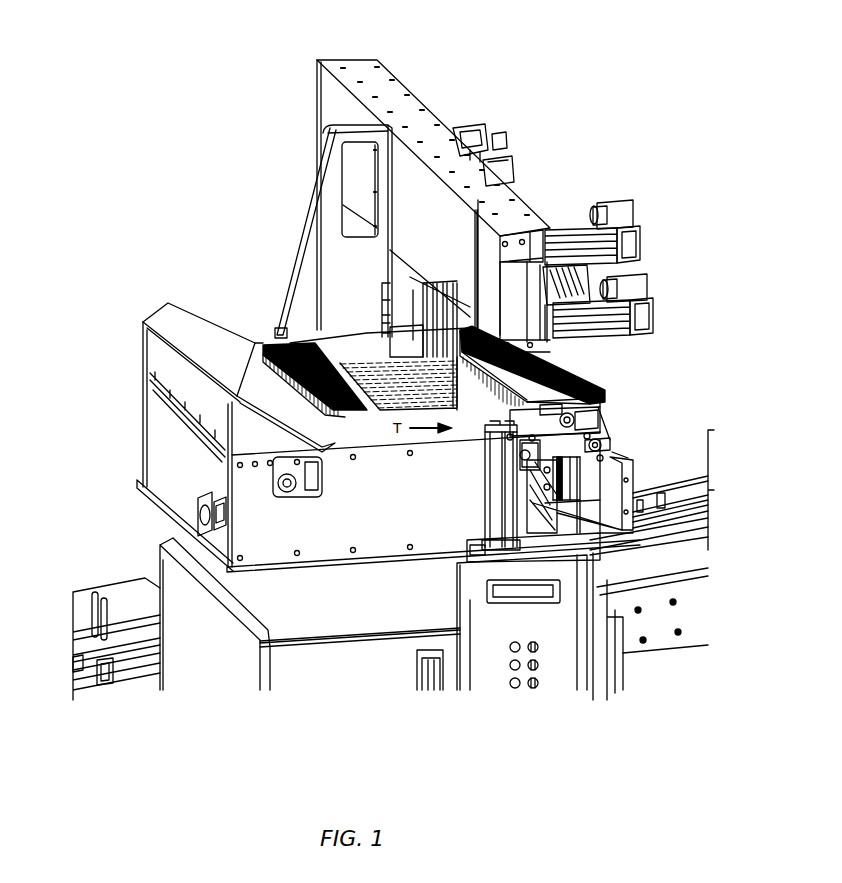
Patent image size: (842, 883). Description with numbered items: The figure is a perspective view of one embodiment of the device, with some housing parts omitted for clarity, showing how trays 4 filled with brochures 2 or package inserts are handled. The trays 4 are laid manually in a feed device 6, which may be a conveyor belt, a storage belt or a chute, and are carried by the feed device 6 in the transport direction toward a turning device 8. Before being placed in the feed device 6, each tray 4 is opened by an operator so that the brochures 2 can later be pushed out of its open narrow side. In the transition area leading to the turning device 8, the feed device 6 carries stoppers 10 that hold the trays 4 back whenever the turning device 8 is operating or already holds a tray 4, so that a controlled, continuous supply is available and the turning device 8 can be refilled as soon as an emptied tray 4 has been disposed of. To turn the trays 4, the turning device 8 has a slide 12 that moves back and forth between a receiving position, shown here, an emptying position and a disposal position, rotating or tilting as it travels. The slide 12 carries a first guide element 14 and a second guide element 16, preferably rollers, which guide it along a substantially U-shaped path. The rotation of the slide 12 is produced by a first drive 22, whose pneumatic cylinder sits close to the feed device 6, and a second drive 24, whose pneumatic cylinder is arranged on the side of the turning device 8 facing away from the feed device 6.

The brochures 2 is at (273, 335).
The trays 4 is at (257, 374).
The feed device 6 is at (370, 337).
The turning device 8 is at (555, 438).
The stoppers 10 is at (457, 337).
The slide 12 is at (538, 447).
The first guide element 14 is at (525, 458).
The second guide element 16 is at (597, 447).
The first drive 22 is at (490, 482).
The second drive 24 is at (562, 476).